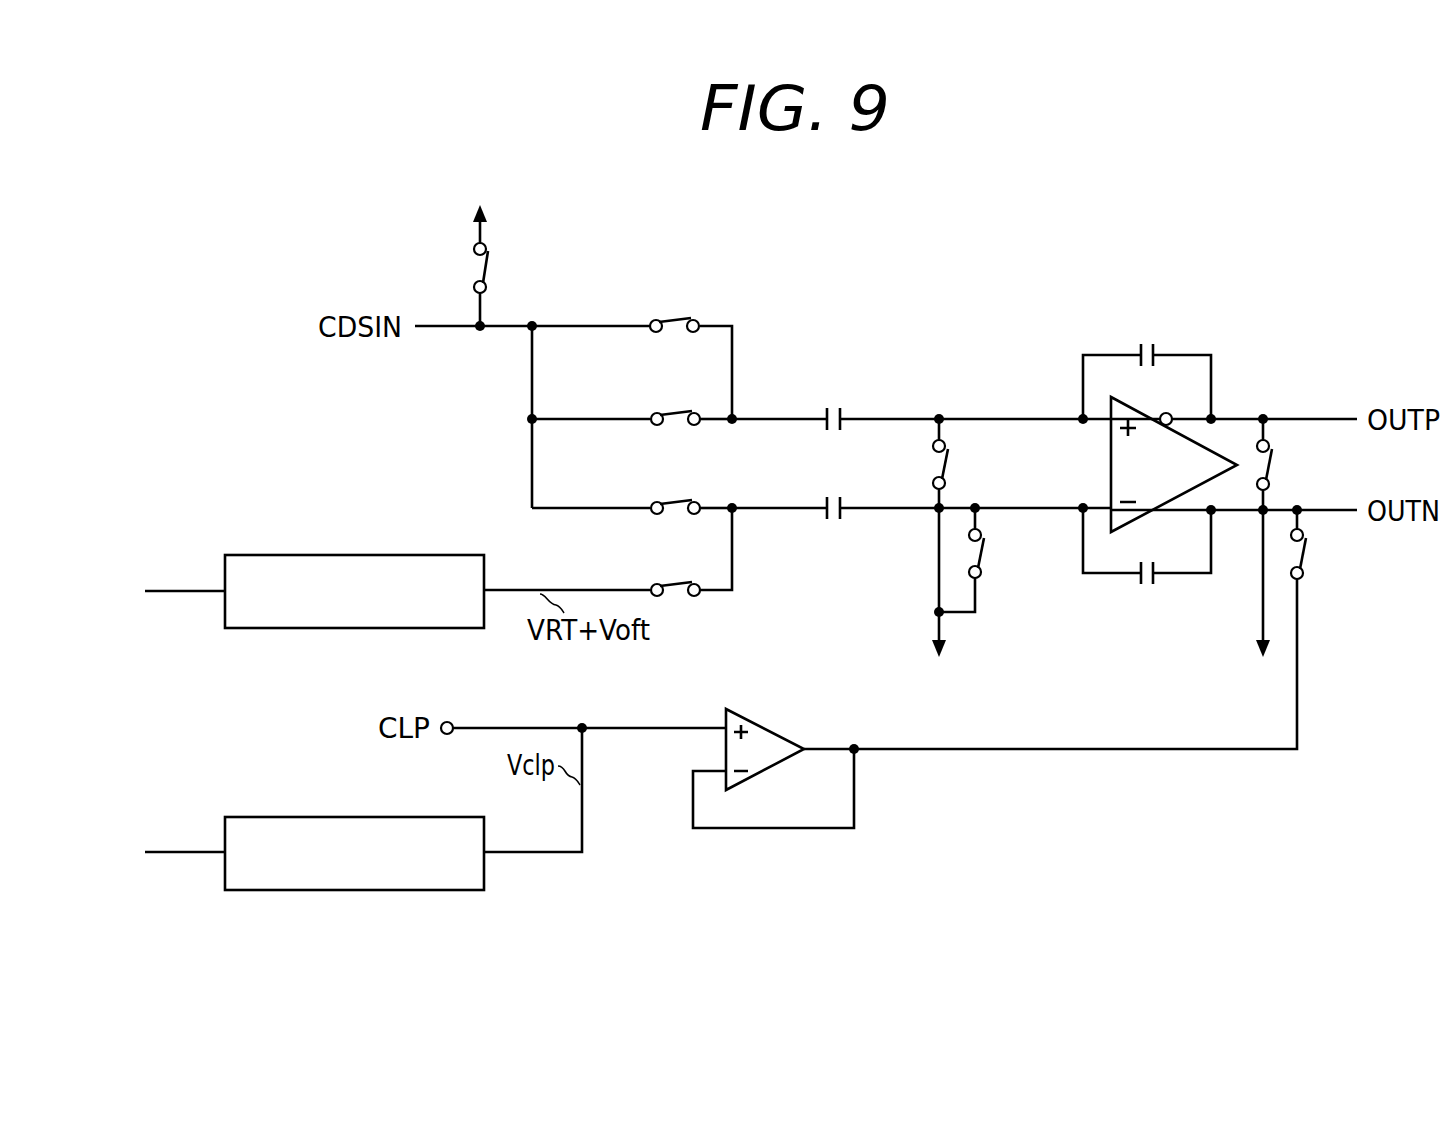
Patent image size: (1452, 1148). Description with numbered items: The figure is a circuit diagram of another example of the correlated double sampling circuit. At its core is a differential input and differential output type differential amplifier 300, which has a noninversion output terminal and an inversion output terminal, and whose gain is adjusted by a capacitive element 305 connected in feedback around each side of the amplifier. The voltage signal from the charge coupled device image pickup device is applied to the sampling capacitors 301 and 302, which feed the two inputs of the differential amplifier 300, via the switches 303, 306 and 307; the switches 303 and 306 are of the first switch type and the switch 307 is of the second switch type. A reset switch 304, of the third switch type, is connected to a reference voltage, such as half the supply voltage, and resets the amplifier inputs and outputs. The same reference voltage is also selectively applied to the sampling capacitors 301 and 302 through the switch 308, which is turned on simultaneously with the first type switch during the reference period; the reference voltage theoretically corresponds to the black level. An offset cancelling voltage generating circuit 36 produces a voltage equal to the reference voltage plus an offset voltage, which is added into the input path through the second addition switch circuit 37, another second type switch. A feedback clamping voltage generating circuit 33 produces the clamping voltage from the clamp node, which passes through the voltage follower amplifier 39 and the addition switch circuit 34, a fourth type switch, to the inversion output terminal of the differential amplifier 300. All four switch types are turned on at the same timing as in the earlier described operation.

The differential amplifier 300 is at (1145, 414).
The sampling capacitor 301 is at (832, 406).
The sampling capacitor 302 is at (832, 524).
The sampling switch 303 is at (645, 499).
The reset switch 304 is at (948, 440).
The capacitive element for gain adjustment 305 is at (1142, 344).
The switch 306 is at (645, 411).
The switch 307 is at (645, 319).
The switch 308 is at (473, 265).
The feedback clamping voltage generating circuit 33 is at (277, 818).
The addition switch circuit 34 is at (1306, 554).
The offset cancelling voltage generating circuit 36 is at (277, 556).
The second addition switch circuit 37 is at (645, 581).
The voltage follower amplifier 39 is at (770, 728).